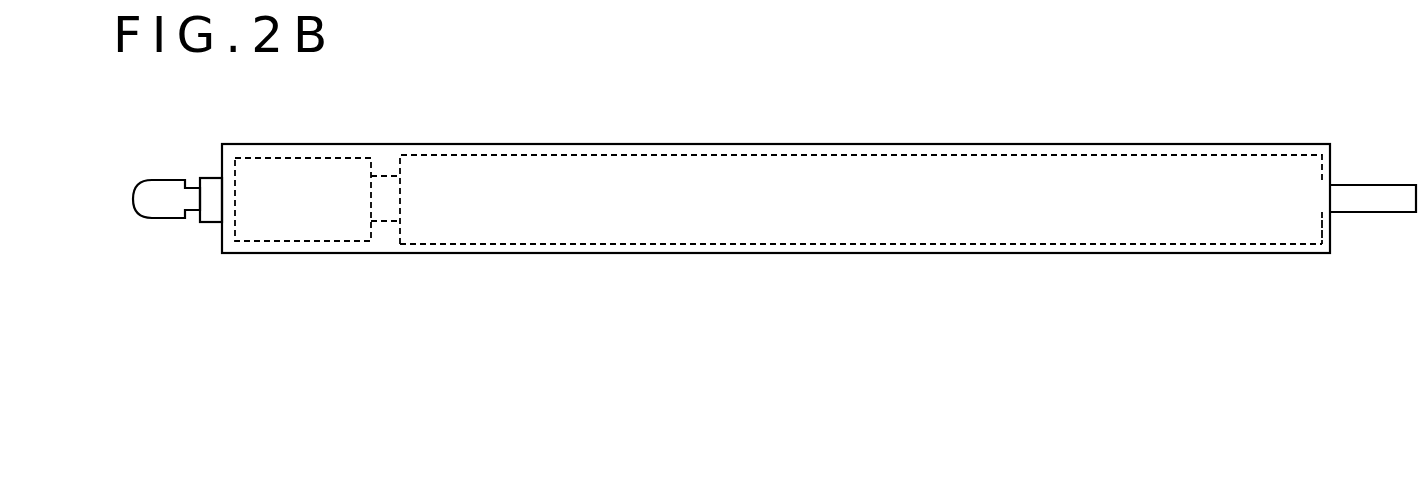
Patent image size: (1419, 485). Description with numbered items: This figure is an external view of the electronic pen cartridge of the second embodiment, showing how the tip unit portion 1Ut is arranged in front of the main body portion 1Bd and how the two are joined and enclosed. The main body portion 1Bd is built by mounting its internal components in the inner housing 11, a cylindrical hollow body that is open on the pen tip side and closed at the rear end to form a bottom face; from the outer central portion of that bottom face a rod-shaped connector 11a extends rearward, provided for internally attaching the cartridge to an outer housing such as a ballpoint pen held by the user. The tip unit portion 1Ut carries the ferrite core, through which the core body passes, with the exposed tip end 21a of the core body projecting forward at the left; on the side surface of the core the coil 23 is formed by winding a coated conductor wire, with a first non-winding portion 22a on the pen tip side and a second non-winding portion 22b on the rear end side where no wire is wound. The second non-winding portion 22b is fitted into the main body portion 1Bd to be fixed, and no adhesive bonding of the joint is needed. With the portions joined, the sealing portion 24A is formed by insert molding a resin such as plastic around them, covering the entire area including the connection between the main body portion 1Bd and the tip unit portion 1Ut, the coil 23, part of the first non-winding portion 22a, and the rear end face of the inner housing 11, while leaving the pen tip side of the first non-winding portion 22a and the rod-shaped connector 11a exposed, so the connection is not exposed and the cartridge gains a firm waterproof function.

The inner housing 11 is at (486, 155).
The rod-shaped connector 11a is at (1370, 183).
The cap 21a is at (162, 190).
The first non-winding portion 22a is at (208, 176).
The second non-winding portion 22b is at (382, 185).
The coil 23 is at (303, 167).
The sealing portion 24A is at (670, 144).
The tip unit portion 1Ut is at (275, 219).
The main body portion 1Bd is at (908, 213).